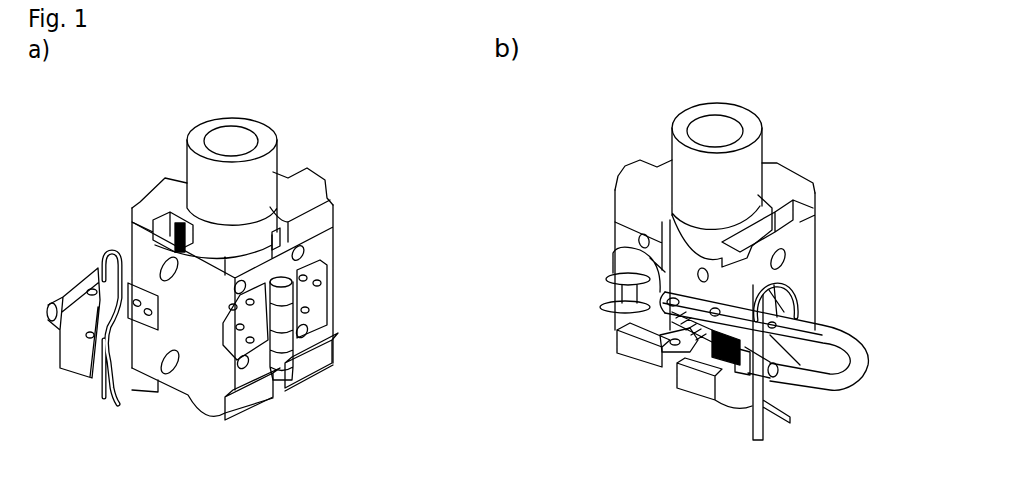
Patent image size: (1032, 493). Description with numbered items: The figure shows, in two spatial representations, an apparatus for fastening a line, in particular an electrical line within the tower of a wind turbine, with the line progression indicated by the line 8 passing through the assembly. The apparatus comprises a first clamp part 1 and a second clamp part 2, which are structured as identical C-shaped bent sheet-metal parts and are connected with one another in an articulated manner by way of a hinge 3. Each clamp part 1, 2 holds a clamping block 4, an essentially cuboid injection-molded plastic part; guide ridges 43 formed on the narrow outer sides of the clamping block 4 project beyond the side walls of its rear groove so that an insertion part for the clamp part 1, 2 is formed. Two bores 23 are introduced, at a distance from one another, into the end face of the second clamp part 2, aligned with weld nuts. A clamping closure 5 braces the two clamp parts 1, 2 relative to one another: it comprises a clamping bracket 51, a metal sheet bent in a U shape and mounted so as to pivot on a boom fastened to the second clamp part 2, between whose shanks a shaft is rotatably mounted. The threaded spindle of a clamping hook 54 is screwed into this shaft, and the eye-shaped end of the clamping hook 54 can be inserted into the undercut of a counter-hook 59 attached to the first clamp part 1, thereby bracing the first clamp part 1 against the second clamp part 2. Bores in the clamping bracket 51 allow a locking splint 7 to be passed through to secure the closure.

The first clamp part 1 is at (330, 248).
The second clamp part 2 is at (197, 388).
The hinge 3 is at (319, 300).
The clamping block 4 is at (308, 184).
The clamping closure 5 is at (77, 247).
The locking splint 7 is at (86, 402).
The cylindrical socket 8 is at (254, 125).
The bores 23 is at (786, 256).
The guide ridges 43 is at (319, 350).
The clamping bracket 51 is at (820, 335).
The clamping hook 54 is at (647, 328).
The counter-hook 59 is at (607, 307).